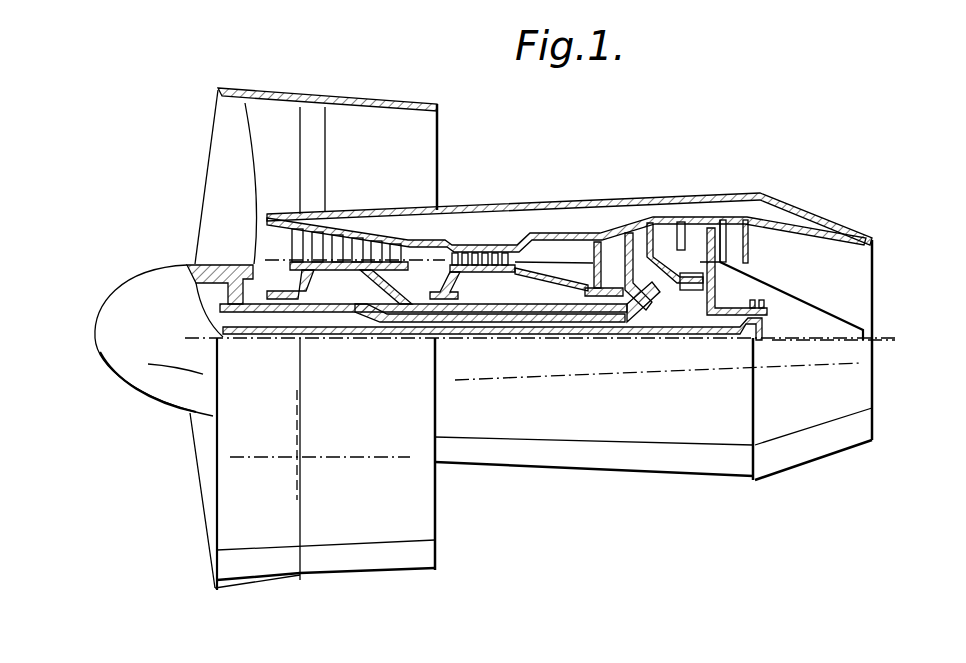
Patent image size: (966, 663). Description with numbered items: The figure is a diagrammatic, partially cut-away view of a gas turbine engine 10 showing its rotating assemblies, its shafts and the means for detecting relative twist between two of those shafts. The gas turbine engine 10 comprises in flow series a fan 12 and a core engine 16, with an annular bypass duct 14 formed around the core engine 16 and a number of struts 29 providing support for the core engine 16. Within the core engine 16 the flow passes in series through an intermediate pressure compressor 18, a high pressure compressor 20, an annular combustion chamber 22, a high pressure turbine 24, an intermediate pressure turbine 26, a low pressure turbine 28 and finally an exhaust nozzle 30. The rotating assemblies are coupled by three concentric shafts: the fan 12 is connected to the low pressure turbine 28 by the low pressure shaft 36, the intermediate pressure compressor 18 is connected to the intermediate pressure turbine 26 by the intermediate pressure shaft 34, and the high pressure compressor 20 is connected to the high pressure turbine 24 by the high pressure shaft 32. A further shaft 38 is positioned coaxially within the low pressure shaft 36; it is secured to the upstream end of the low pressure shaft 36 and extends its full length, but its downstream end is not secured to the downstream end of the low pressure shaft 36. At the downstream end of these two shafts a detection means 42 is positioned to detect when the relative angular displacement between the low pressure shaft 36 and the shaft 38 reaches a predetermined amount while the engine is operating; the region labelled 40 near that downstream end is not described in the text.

The gas turbine engine 10 is at (178, 499).
The fan 12 is at (215, 167).
The annular bypass duct 14 is at (400, 127).
The core engine 16 is at (603, 190).
The intermediate pressure compressor 18 is at (368, 245).
The high pressure compressor 20 is at (490, 248).
The annular combustion chamber 22 is at (568, 252).
The high pressure turbine 24 is at (600, 232).
The intermediate pressure turbine 26 is at (655, 225).
The low pressure turbine 28 is at (737, 217).
The struts 29 is at (825, 221).
The exhaust nozzle 30 is at (847, 275).
The high pressure shaft 32 is at (548, 285).
The intermediate pressure shaft 34 is at (605, 278).
The low pressure shaft 36 is at (508, 320).
The shaft 38 is at (678, 305).
The exhaust cone flange 40 is at (767, 313).
The detection means 42 is at (774, 323).